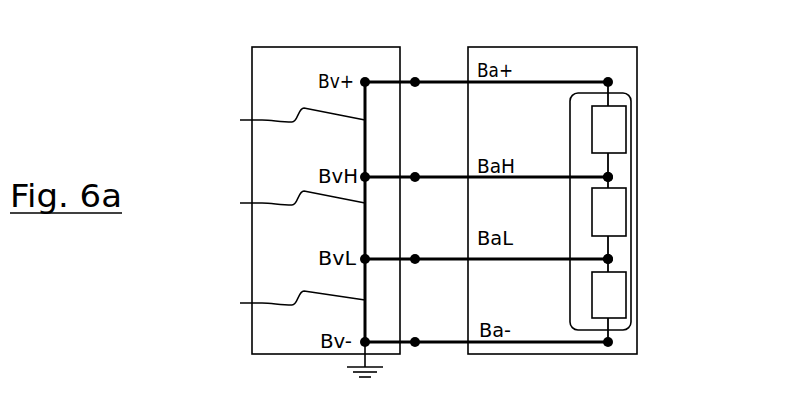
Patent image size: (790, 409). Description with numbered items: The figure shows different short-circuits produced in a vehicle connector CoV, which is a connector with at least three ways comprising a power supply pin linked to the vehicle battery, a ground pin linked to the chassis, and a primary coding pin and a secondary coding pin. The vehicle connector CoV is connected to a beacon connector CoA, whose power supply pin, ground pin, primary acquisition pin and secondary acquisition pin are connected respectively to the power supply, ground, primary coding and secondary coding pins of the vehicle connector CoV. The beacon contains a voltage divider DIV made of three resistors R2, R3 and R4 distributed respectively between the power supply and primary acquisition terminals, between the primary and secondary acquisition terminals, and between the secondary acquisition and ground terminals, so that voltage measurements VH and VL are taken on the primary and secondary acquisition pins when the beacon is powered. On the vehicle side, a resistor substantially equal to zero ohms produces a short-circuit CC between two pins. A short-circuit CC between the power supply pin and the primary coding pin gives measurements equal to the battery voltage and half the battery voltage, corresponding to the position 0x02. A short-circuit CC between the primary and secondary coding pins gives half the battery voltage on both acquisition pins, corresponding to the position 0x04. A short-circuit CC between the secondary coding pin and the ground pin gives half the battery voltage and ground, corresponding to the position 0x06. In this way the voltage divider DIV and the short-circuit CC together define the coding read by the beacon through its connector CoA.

The vehicle connector CoV is at (368, 30).
The beacon connector CoA is at (595, 30).
The voltage divider DIV is at (570, 212).
The resistor R2 is at (609, 129).
The resistor R3 is at (609, 212).
The resistor R4 is at (609, 295).
The voltage measurement VH is at (608, 177).
The voltage measurement VL is at (608, 259).
The short-circuit CC is at (350, 227).
The position 0x02 is at (275, 122).
The position 0x04 is at (275, 200).
The position 0x06 is at (275, 301).